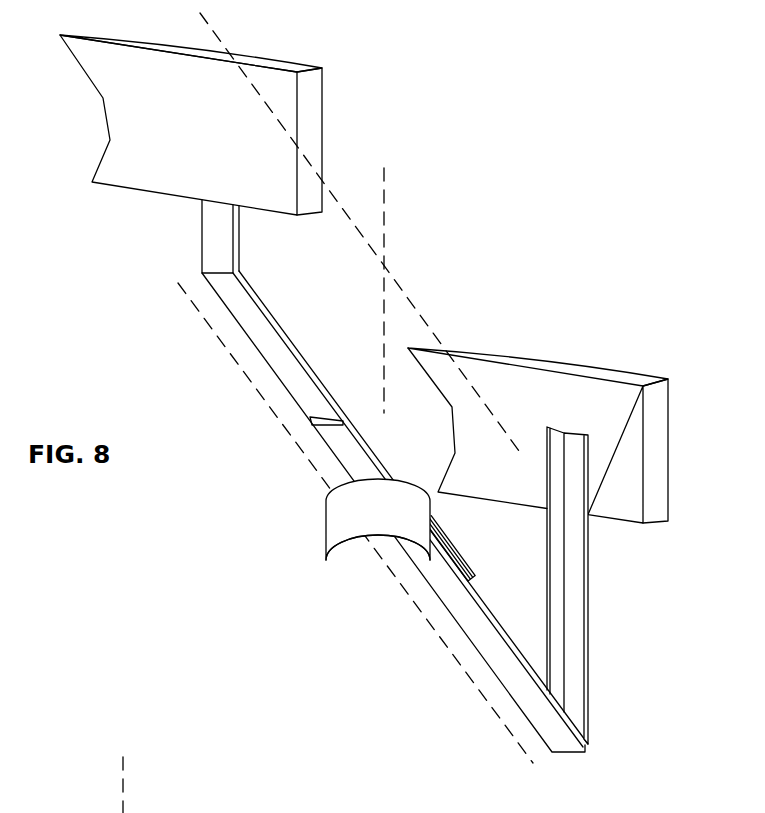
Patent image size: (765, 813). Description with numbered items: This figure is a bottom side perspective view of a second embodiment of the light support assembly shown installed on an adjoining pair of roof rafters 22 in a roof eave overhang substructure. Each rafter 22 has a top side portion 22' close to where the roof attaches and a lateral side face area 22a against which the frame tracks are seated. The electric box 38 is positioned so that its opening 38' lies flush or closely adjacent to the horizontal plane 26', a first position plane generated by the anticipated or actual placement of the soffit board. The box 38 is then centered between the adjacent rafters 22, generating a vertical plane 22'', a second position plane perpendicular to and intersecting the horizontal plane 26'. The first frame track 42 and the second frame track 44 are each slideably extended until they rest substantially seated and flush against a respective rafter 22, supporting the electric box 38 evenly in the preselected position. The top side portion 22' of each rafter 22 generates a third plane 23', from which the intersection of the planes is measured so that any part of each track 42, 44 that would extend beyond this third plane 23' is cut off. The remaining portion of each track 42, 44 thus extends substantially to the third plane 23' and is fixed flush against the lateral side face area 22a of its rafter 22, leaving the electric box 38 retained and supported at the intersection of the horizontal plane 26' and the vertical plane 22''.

The roof rafter 22 is at (389, 323).
The top side portion of rafter 22' is at (376, 195).
The vertical plane 22'' is at (440, 290).
The lateral side face area 22a is at (510, 387).
The third plane 23' is at (322, 413).
The horizontal plane 26' is at (380, 517).
The electric box 38 is at (333, 571).
The opening of electric box 38' is at (333, 576).
The first frame track 42 is at (217, 242).
The second frame track 44 is at (567, 753).